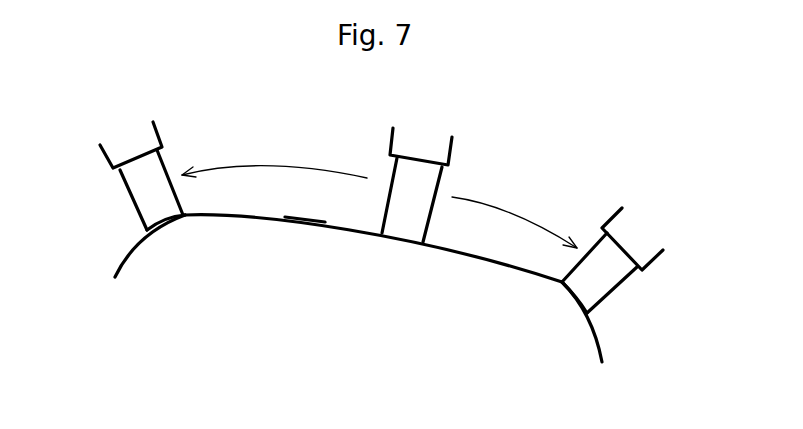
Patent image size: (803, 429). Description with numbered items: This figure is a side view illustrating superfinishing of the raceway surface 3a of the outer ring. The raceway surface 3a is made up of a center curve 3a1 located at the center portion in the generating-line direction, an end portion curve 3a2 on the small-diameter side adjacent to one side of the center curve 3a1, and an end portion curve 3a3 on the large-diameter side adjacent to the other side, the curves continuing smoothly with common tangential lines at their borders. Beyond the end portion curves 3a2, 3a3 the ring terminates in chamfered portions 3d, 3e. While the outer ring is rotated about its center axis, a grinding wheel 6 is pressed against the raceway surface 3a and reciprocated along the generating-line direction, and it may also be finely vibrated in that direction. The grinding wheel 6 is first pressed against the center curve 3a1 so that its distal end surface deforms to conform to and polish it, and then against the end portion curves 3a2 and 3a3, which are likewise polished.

The raceway surface 3a is at (467, 245).
The center curve 3a1 is at (290, 221).
The end portion curve 3a2 is at (162, 225).
The end portion curve 3a3 is at (575, 295).
The chamfered portion 3d is at (123, 257).
The chamfered portion 3e is at (600, 343).
The grinding wheel 6 is at (423, 181).